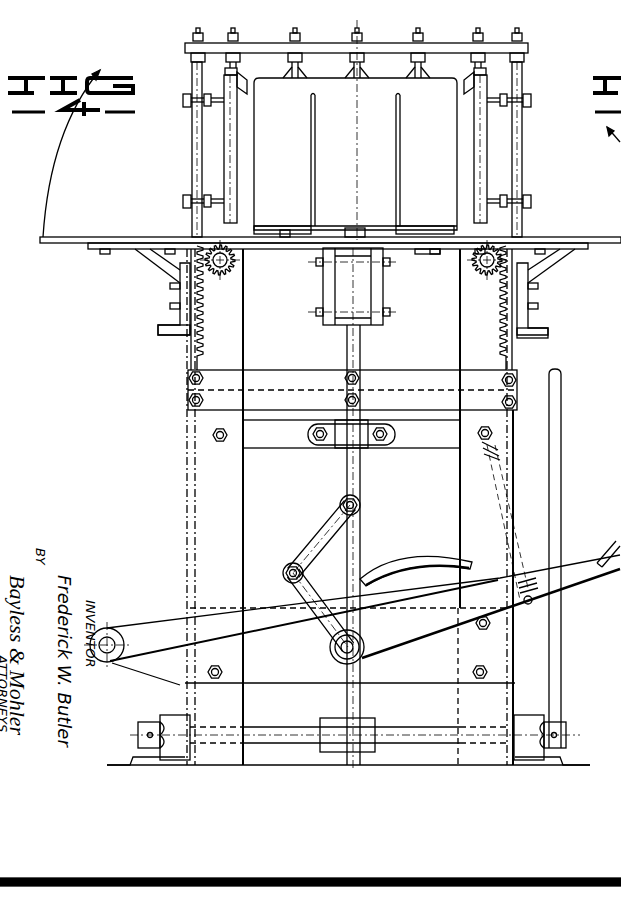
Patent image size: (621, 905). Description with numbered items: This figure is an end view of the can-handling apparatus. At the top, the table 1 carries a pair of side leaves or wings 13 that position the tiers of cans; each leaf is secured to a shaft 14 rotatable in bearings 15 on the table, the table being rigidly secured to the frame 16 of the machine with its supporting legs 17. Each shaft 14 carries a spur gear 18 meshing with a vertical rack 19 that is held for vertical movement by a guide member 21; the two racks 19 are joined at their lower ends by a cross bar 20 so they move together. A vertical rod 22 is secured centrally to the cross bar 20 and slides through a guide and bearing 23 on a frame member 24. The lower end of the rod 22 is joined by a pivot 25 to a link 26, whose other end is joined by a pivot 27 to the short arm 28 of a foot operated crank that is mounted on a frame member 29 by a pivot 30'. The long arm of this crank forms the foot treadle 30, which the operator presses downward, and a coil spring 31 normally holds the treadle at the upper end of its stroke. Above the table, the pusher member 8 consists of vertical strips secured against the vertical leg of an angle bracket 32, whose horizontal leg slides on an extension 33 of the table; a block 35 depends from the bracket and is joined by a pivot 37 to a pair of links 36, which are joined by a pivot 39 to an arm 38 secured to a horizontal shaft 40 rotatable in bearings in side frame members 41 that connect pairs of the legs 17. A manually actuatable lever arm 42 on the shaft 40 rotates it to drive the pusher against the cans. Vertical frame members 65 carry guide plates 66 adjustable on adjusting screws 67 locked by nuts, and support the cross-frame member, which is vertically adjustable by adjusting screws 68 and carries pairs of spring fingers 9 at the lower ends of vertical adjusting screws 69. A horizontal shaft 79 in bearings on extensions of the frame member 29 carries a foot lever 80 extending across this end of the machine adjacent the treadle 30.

The table 1 is at (288, 240).
The pusher member 8 is at (268, 138).
The spring fingers 9 is at (303, 75).
The side leaves or wings 13 is at (74, 237).
The shafts 14 is at (233, 265).
The bearings 15 is at (262, 240).
The frame 16 is at (158, 330).
The supporting legs 17 is at (186, 505).
The spur gear 18 is at (505, 248).
The vertical racks 19 is at (518, 250).
The cross bar 20 is at (437, 370).
The guide members 21 is at (196, 311).
The vertical rod 22 is at (361, 462).
The guide and bearing 23 is at (334, 446).
The frame member 24 is at (421, 445).
The pivot 25 is at (361, 505).
The link 26 is at (326, 524).
The pivot 27 is at (289, 563).
The short arm 28 is at (312, 624).
The frame member 29 is at (279, 684).
The foot treadle 30 is at (491, 584).
The pivot 30' is at (331, 653).
The coil spring 31 is at (528, 580).
The angle bracket 32 is at (420, 228).
The extension 33 is at (378, 240).
The block 35 is at (340, 240).
The links 36 is at (323, 292).
The pivot 37 is at (320, 262).
The arm 38 is at (360, 350).
The pivot 39 is at (318, 312).
The horizontal shaft 40 is at (428, 727).
The side frame members 41 is at (170, 715).
The manually actuatable lever arm 42 is at (549, 660).
The vertical frame members 65 is at (192, 130).
The guide plates 66 is at (226, 165).
The adjusting screws 67 is at (503, 95).
The vertical adjusting screws 68 is at (198, 36).
The vertical adjusting screw 69 is at (238, 36).
The horizontal shaft 79 is at (112, 640).
The foot lever 80 is at (170, 625).